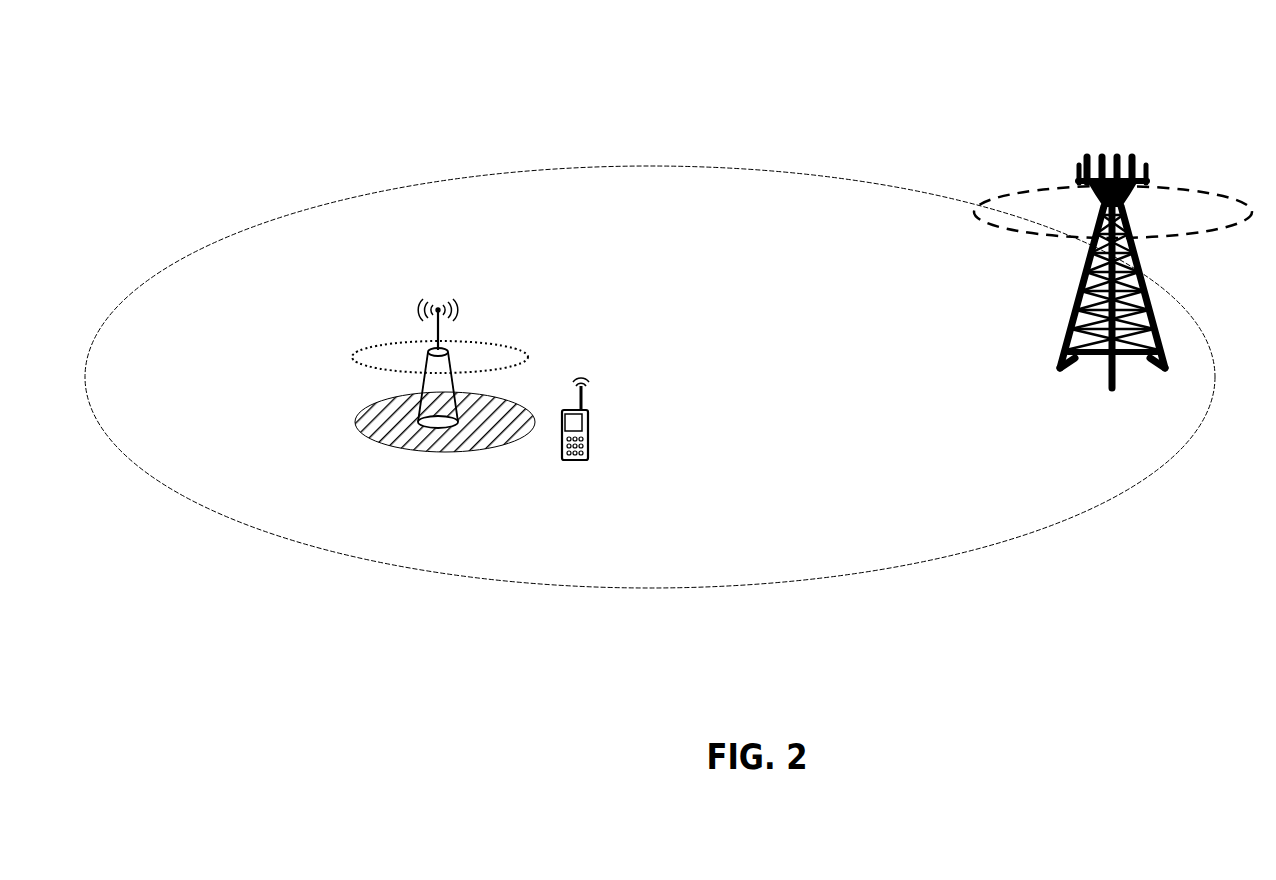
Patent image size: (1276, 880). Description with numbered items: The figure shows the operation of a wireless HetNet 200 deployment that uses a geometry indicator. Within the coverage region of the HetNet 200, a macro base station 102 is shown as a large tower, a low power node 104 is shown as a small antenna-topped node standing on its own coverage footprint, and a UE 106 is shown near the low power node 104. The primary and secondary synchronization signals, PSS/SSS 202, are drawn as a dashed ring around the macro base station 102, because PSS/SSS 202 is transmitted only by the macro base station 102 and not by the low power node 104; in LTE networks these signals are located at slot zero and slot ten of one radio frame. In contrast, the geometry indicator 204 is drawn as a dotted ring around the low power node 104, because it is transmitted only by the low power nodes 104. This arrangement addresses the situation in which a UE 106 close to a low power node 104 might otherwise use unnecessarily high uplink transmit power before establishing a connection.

The HetNet 200 is at (546, 99).
The macro base station 102 is at (1150, 243).
The low power node 104 is at (372, 337).
The UE 106 is at (611, 443).
The primary synchronization signal and secondary synchronization signal (PSS/SSS) 202 is at (973, 216).
The geometry indicator 204 is at (502, 341).